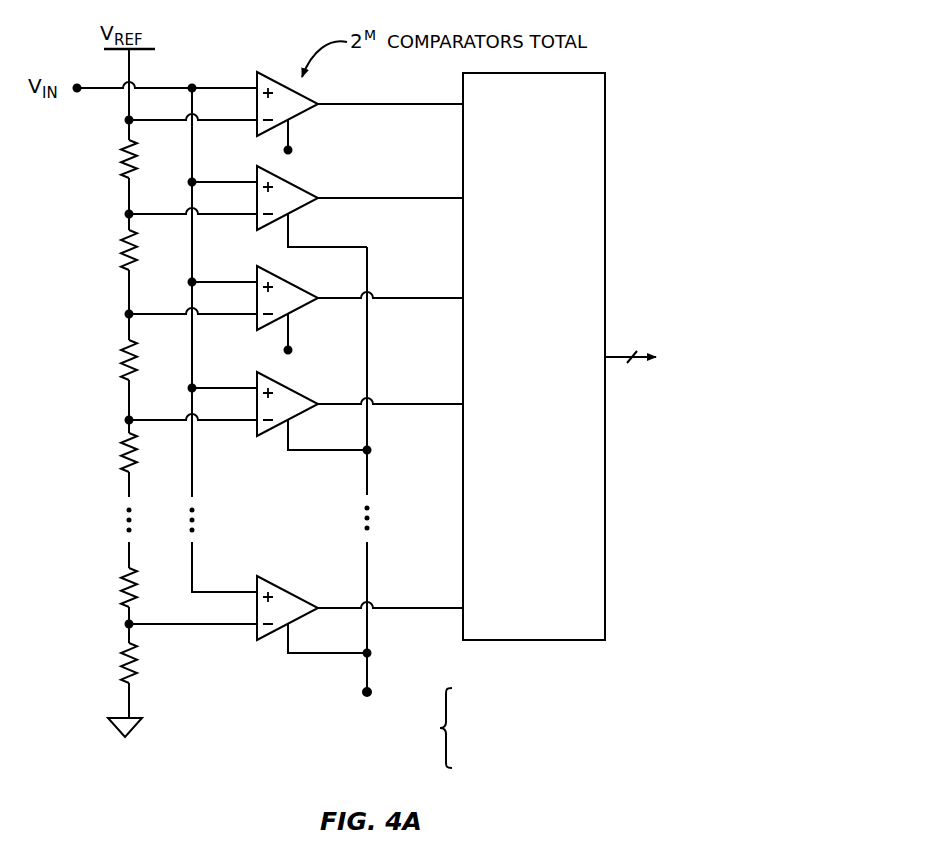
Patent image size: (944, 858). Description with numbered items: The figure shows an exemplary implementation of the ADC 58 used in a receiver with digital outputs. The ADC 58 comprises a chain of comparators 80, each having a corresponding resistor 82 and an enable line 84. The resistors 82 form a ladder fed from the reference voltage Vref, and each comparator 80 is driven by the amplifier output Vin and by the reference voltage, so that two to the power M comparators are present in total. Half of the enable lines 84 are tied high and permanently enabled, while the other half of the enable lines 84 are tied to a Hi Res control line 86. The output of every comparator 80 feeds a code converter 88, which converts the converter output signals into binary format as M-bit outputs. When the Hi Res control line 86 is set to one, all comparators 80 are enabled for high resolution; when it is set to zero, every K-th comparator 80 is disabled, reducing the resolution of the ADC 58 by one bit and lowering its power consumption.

The ADC 58 is at (76, 521).
The comparator 80 is at (281, 79).
The resistor 82 is at (128, 143).
The enable line 84 is at (286, 151).
The Hi Res control line 86 is at (369, 676).
The code converter 88 is at (606, 178).